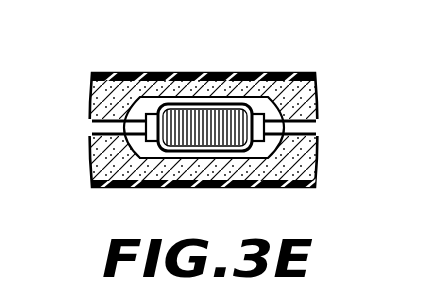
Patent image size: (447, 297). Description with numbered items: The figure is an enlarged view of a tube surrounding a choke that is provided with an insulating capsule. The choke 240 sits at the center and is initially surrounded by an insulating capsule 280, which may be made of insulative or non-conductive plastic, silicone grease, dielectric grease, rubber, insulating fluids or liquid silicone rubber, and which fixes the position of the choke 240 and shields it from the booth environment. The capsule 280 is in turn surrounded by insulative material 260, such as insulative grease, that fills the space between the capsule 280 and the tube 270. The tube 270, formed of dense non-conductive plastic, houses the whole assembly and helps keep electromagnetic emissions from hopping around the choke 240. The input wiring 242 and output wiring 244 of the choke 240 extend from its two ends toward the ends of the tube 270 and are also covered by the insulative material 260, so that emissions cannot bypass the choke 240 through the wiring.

The choke 240 is at (182, 146).
The input wiring 242 is at (121, 122).
The output wiring 244 is at (287, 128).
The insulative material 260 is at (283, 100).
The tube 270 is at (233, 73).
The insulating capsule 280 is at (151, 96).